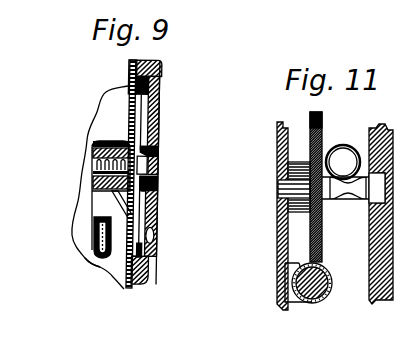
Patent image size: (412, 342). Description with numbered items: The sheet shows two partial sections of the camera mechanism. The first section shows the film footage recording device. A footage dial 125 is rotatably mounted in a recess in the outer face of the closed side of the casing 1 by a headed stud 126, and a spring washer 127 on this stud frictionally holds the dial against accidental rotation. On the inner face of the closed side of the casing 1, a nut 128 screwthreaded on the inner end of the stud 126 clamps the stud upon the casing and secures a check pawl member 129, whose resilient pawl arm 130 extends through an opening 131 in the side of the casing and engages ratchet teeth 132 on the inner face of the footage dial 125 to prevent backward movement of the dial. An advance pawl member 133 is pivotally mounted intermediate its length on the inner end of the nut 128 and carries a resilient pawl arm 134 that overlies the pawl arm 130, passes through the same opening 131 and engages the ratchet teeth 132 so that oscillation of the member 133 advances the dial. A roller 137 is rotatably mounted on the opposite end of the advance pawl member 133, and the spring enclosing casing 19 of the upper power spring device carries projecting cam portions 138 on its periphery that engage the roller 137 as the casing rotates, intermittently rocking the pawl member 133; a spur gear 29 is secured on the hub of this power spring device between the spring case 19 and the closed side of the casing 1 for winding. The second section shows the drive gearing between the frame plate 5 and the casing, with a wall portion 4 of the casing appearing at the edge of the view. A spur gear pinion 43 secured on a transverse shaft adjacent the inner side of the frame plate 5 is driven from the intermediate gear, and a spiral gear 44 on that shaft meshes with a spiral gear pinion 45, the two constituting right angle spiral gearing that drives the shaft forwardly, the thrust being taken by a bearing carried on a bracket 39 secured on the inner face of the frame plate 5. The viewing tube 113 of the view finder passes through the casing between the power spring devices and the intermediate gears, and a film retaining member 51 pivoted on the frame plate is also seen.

In FIG. 9, the casing 1 is at (157, 284).
In FIG. 9, the spring enclosing casing 19 is at (106, 126).
In FIG. 9, the spur gear 29 is at (129, 290).
In FIG. 9, the footage dial 125 is at (160, 221).
In FIG. 9, the headed stud 126 is at (153, 167).
In FIG. 9, the spring washer 127 is at (157, 149).
In FIG. 9, the nut 128 is at (95, 183).
In FIG. 9, the check pawl member 129 is at (159, 123).
In FIG. 9, the resilient pawl arm 130 is at (163, 91).
In FIG. 9, the opening 131 is at (161, 67).
In FIG. 9, the ratchet teeth 132 is at (160, 244).
In FIG. 9, the advance pawl member 133 is at (101, 268).
In FIG. 9, the resilient pawl arm 134 is at (130, 88).
In FIG. 9, the roller 137 is at (96, 219).
In FIG. 9, the cam portions 138 is at (92, 142).
In FIG. 11, the wall 4 is at (393, 200).
In FIG. 11, the frame plate 5 is at (278, 136).
In FIG. 11, the bracket 39 is at (285, 293).
In FIG. 11, the spur gear pinion 43 is at (284, 204).
In FIG. 11, the spiral gear 44 is at (311, 118).
In FIG. 11, the spiral gear pinion 45 is at (326, 300).
In FIG. 11, the film retaining members 51 is at (256, 341).
In FIG. 11, the viewing tube 113 is at (346, 145).